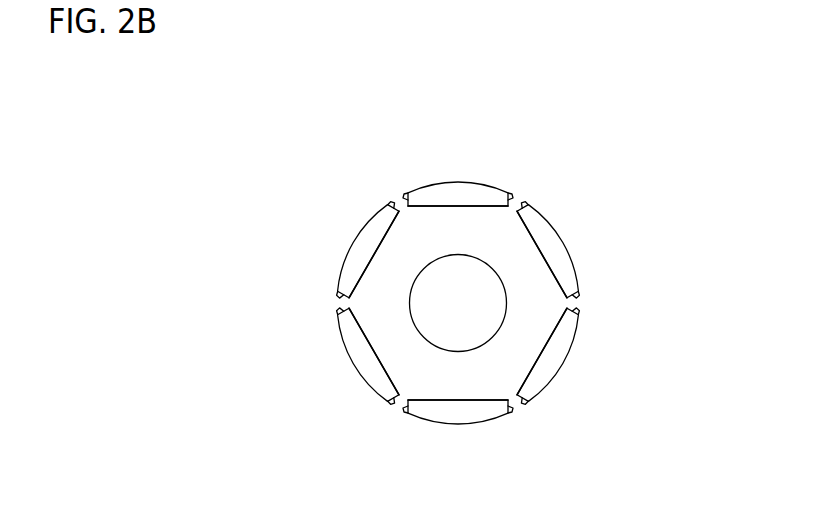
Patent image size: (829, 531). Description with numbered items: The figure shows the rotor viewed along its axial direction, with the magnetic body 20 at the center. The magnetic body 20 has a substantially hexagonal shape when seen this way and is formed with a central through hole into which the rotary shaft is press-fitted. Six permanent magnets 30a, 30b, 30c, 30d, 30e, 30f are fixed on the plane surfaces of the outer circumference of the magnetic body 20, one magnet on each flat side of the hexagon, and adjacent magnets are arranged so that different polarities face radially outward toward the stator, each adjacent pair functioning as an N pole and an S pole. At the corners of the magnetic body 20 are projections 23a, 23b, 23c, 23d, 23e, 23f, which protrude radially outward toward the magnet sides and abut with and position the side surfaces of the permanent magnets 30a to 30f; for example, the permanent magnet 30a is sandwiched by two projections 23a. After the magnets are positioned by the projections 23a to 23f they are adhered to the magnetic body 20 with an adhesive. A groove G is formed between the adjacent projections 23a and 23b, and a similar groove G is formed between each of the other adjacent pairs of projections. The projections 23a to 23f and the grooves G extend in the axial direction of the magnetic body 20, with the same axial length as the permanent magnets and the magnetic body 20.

The magnetic body 20 is at (487, 228).
The permanent magnet 30a is at (557, 252).
The permanent magnet 30b is at (557, 355).
The permanent magnet 30c is at (463, 412).
The permanent magnet 30d is at (367, 362).
The permanent magnet 30e is at (365, 243).
The permanent magnet 30f is at (444, 195).
The projection 23a is at (523, 207).
The projection 23b is at (568, 310).
The projection 23c is at (408, 408).
The projection 23d is at (343, 315).
The projection 23e is at (397, 208).
The projection 23f is at (408, 195).
The groove G is at (405, 210).